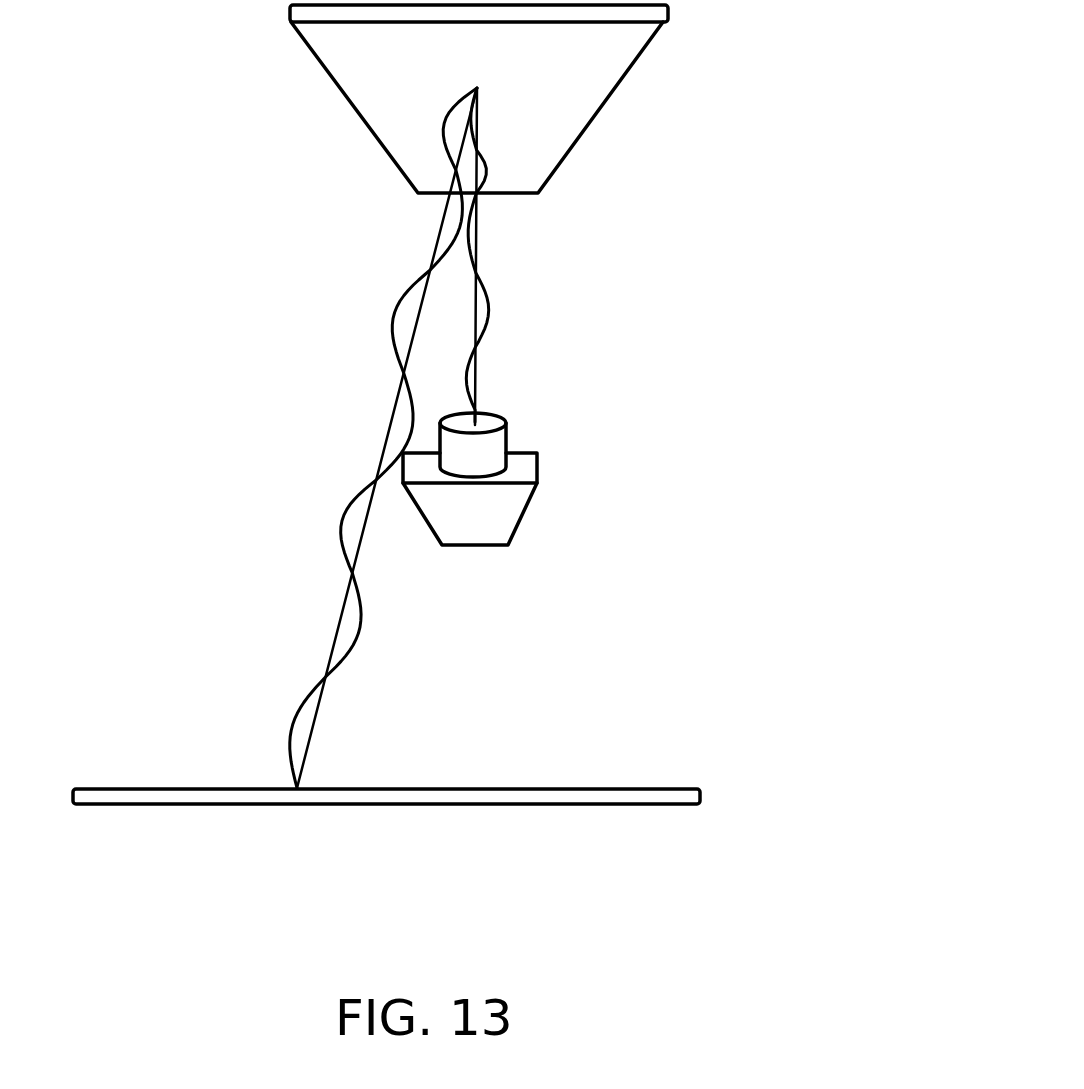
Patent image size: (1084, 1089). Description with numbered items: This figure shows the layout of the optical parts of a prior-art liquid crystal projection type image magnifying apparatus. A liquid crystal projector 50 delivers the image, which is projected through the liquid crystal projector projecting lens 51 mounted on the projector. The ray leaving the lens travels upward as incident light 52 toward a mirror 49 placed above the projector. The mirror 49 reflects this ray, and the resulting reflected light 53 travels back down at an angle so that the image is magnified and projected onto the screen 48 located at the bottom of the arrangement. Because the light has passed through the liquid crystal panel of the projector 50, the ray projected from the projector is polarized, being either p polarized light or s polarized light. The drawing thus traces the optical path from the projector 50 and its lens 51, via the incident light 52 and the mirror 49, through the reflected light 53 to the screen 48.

The screen 48 is at (668, 803).
The mirror 49 is at (613, 55).
The liquid crystal projector 50 is at (527, 513).
The liquid crystal projector projecting lens 51 is at (507, 433).
The incident light 52 is at (467, 260).
The reflected light 53 is at (352, 500).